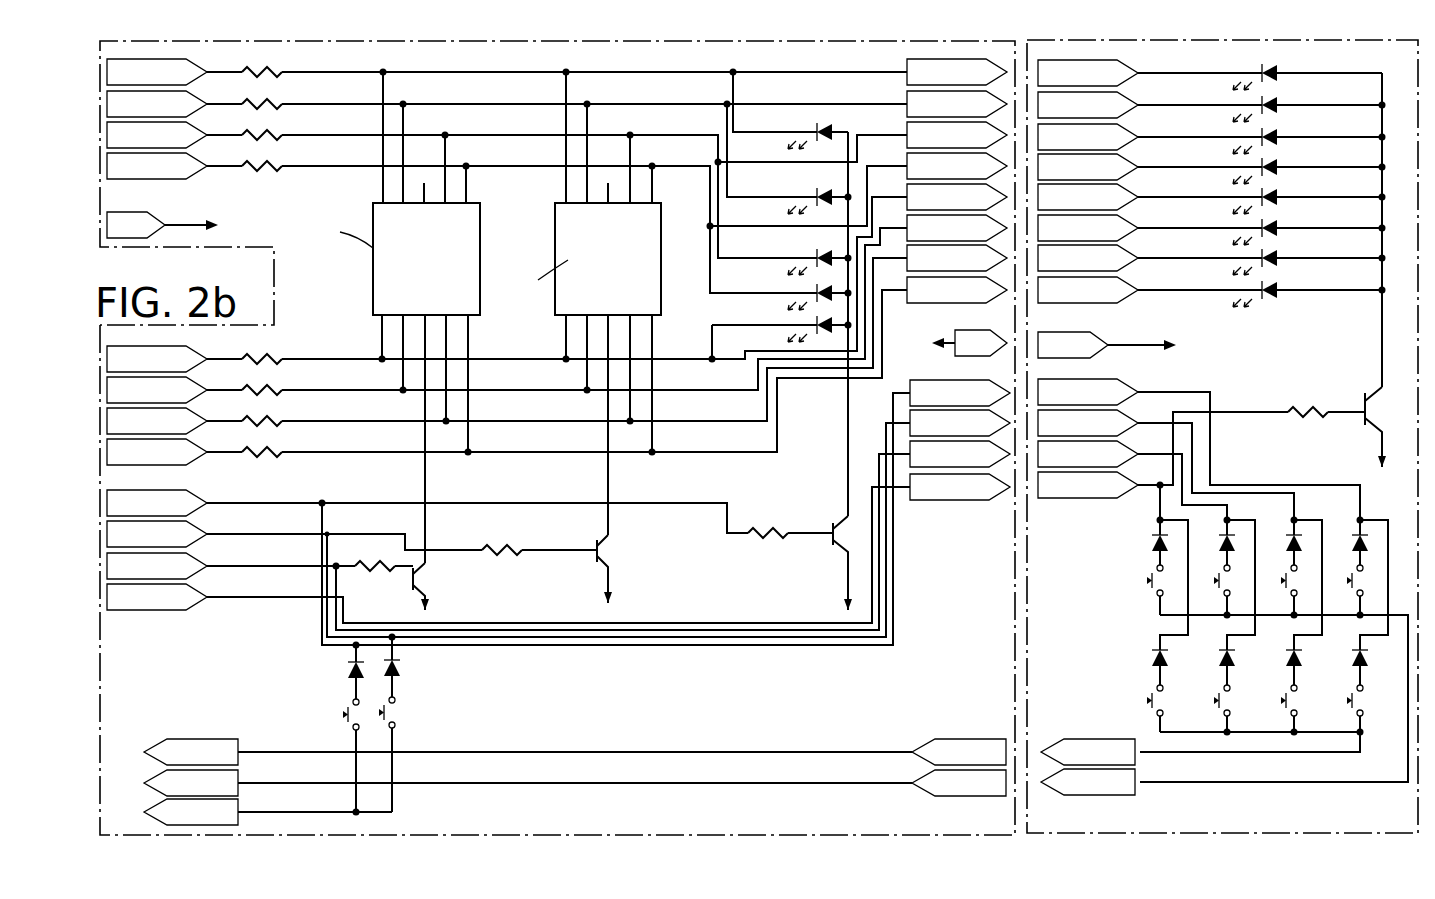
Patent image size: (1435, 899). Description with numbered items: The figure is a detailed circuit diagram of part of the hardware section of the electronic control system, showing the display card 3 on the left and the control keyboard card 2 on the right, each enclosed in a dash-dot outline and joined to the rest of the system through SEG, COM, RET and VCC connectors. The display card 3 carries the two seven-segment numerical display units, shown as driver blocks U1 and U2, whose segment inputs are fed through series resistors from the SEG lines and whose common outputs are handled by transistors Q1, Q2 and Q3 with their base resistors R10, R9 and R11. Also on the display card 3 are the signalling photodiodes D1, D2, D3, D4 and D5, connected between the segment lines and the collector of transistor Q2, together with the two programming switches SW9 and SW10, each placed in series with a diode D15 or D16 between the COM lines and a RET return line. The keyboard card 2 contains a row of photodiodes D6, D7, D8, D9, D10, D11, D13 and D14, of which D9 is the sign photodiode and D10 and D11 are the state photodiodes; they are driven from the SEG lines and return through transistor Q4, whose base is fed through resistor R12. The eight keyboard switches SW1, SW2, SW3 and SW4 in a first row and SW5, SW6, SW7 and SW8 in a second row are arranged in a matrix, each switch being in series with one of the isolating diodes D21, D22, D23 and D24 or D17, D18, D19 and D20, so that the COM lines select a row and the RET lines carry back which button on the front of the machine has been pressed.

The display card 3 is at (278, 36).
The control keyboard card 2 is at (1261, 36).
The seven-segment display driver U1 is at (420, 262).
The seven-segment display driver U2 is at (605, 262).
The transistor Q1 is at (624, 562).
The transistor Q2 is at (829, 544).
The transistor Q3 is at (440, 584).
The transistor Q4 is at (1390, 425).
The resistor R9 is at (768, 533).
The resistor R10 is at (503, 553).
The resistor R11 is at (375, 579).
The resistor R12 is at (1306, 389).
The signalling photodiode D1 is at (784, 129).
The signalling photodiode D2 is at (782, 194).
The signalling photodiode D3 is at (778, 255).
The signalling photodiode D4 is at (774, 290).
The signalling photodiode D5 is at (774, 322).
The signalling photodiode D6 is at (1295, 67).
The signalling photodiode D7 is at (1295, 99).
The signalling photodiode D8 is at (1295, 131).
The sign photodiode D9 is at (1295, 161).
The state photodiode D10 is at (1301, 191).
The state photodiode D11 is at (1301, 222).
The LED D13 is at (1301, 252).
The LED D14 is at (1301, 284).
The diode D15 is at (326, 671).
The diode D16 is at (420, 671).
The diode D17 is at (1132, 651).
The diode D18 is at (1202, 664).
The diode D19 is at (1271, 664).
The diode D20 is at (1336, 663).
The diode D21 is at (1131, 524).
The diode D22 is at (1240, 530).
The diode D23 is at (1319, 516).
The diode D24 is at (1384, 514).
The keyboard switch SW1 is at (1138, 592).
The keyboard switch SW2 is at (1215, 602).
The keyboard switch SW3 is at (1280, 602).
The keyboard switch SW4 is at (1344, 602).
The keyboard switch SW5 is at (1178, 700).
The keyboard switch SW6 is at (1245, 700).
The keyboard switch SW7 is at (1312, 700).
The keyboard switch SW8 is at (1377, 701).
The programming switch SW9 is at (327, 714).
The programming switch SW10 is at (417, 712).